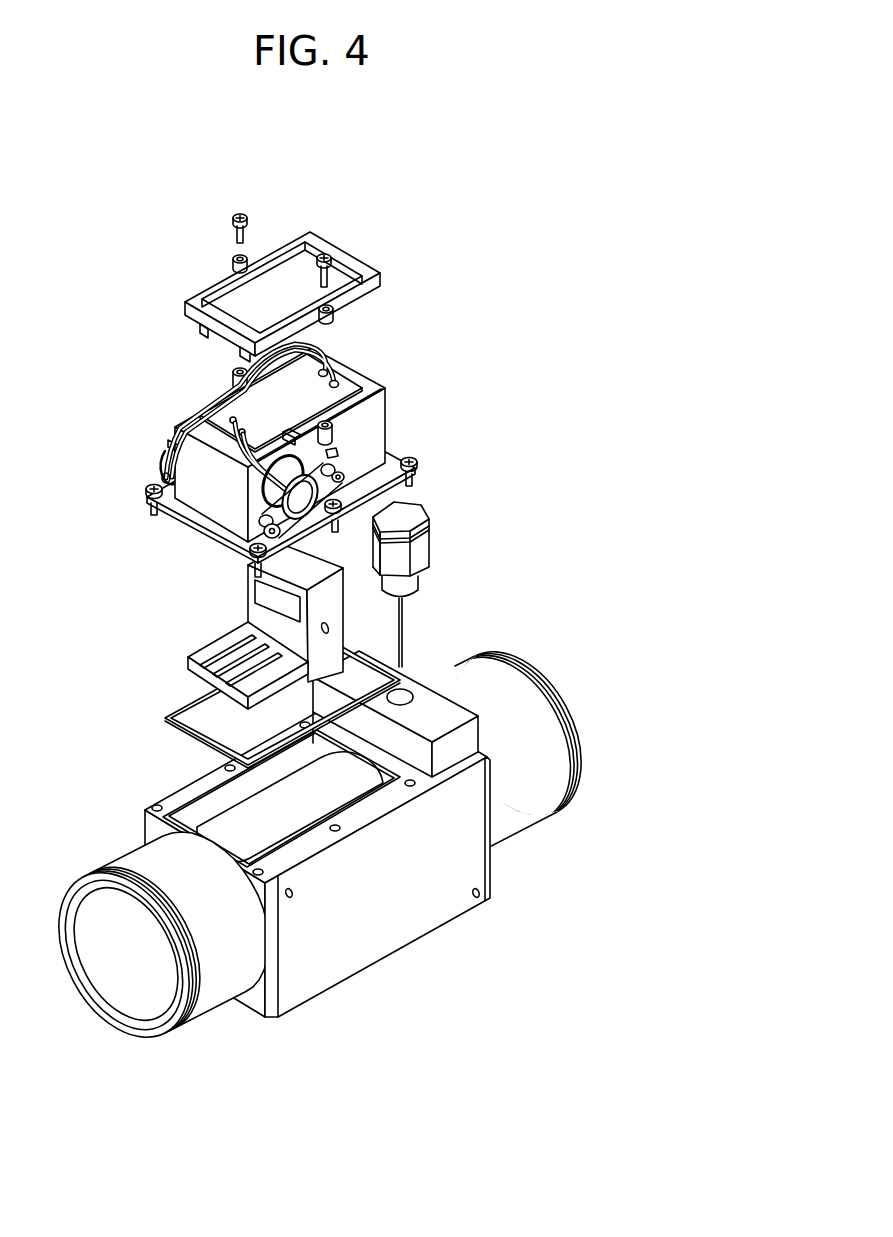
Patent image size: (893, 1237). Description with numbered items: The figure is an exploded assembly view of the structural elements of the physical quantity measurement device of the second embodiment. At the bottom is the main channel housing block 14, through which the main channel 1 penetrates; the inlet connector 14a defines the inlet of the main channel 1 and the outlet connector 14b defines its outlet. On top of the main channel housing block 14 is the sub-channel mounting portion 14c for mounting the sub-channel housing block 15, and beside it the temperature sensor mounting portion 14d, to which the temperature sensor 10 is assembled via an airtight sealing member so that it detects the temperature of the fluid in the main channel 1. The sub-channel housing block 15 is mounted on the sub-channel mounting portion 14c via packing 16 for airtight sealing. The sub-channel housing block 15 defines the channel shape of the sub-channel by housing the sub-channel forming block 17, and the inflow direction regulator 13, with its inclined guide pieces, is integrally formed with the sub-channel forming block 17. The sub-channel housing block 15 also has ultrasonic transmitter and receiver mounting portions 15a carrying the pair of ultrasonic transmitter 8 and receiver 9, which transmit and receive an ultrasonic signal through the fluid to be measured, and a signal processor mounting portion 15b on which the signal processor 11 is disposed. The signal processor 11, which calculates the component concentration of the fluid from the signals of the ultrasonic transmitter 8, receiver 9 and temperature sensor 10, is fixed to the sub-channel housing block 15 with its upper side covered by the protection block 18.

The main channel 1 is at (115, 988).
The ultrasonic transmitter 8 is at (320, 475).
The ultrasonic receiver 9 is at (169, 450).
The temperature sensor 10 is at (417, 553).
The signal processor 11 is at (203, 430).
The inflow direction regulator 13 is at (205, 650).
The main channel housing block 14 is at (261, 850).
The inlet connector 14a is at (208, 960).
The outlet connector 14b is at (513, 777).
The sub-channel mounting portion 14c is at (190, 788).
The temperature sensor mounting portion 14d is at (432, 708).
The sub-channel housing block 15 is at (210, 480).
The ultrasonic transmitter and receiver mounting portions 15a is at (160, 457).
The signal processor mounting portion 15b is at (173, 445).
The packing 16 is at (167, 715).
The sub-channel forming block 17 is at (278, 622).
The protection block 18 is at (228, 278).